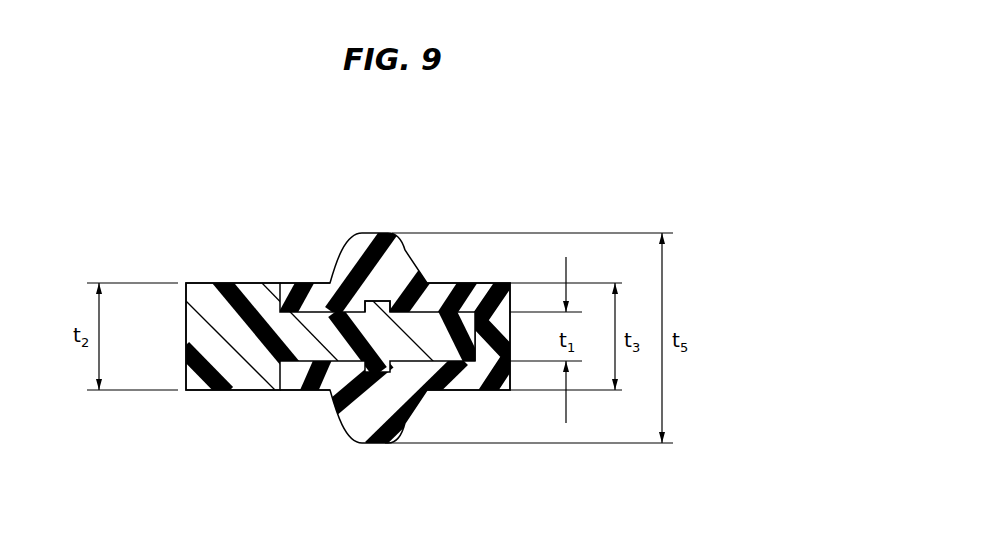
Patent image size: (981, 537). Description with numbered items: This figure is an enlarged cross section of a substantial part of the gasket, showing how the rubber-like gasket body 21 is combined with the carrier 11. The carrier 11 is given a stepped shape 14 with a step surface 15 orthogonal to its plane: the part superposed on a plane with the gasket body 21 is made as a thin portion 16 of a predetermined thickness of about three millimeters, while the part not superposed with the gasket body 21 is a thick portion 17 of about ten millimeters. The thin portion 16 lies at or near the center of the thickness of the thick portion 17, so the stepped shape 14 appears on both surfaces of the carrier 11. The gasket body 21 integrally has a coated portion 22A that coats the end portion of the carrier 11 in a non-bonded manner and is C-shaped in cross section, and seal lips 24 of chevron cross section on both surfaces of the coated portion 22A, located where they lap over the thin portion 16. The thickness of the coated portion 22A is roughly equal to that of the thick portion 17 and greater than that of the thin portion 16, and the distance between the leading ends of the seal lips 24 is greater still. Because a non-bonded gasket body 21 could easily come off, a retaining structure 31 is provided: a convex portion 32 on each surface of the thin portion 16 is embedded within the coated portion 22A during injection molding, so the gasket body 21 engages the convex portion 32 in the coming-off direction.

The carrier 11 is at (213, 300).
The stepped shape 14 is at (298, 274).
The step surface 15 is at (285, 296).
The thin portion 16 is at (496, 352).
The thick portion 17 is at (203, 332).
The gasket body 21 is at (512, 300).
The coated portion 22A is at (478, 312).
The seal lips 24 is at (373, 240).
The retaining structure 31 is at (378, 292).
The convex portion 32 is at (392, 292).